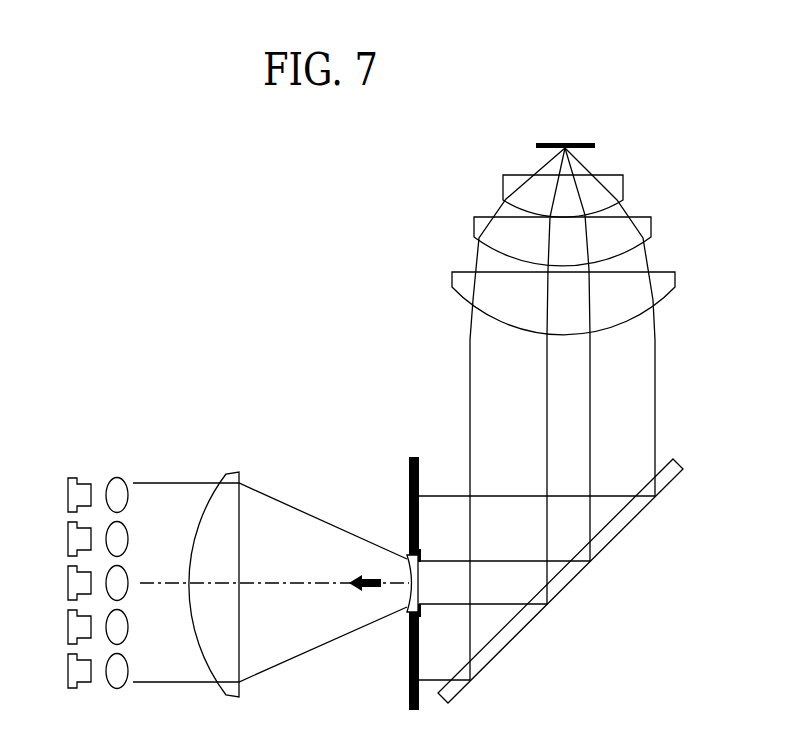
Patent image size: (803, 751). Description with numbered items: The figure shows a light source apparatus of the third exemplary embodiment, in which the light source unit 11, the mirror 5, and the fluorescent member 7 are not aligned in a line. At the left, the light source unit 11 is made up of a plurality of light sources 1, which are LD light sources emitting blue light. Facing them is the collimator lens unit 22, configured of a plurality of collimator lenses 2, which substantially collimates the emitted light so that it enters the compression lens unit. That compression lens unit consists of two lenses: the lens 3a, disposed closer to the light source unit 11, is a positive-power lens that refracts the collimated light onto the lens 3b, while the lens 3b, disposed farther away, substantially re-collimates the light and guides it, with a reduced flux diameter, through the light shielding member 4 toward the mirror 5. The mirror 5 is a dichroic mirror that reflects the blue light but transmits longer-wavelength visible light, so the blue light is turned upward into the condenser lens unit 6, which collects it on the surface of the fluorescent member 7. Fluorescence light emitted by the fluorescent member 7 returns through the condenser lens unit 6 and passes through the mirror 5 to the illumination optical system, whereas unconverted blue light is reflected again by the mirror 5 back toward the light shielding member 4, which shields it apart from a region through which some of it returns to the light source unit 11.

The light source 1 is at (60, 556).
The light source unit 11 is at (83, 484).
The collimator lens 2 is at (140, 559).
The collimator lens unit 22 is at (117, 479).
The lens 3a is at (233, 473).
The lens 3b is at (406, 553).
The light shielding member 4 is at (408, 677).
The mirror 5 is at (664, 509).
The condenser lens unit 6 is at (443, 160).
The fluorescent member 7 is at (573, 141).